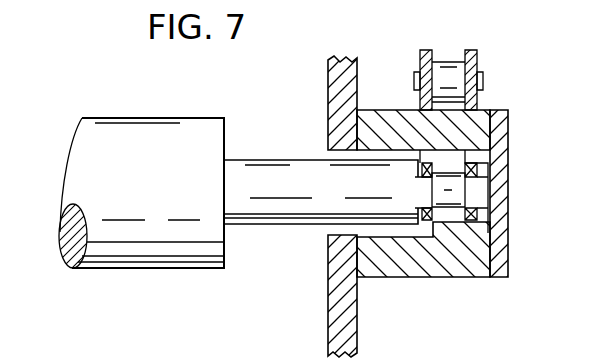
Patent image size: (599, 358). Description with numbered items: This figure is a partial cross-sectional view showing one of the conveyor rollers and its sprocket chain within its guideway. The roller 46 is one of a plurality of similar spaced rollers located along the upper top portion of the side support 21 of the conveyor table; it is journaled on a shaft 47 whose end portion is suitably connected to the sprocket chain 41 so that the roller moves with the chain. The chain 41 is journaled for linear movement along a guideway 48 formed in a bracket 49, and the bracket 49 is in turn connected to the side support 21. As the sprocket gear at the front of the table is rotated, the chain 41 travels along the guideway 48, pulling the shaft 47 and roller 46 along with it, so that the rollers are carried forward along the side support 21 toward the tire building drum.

The side support 21 is at (353, 318).
The sprocket chain 41 is at (497, 170).
The roller 46 is at (152, 248).
The shaft 47 is at (282, 205).
The guideway 48 is at (470, 165).
The bracket 49 is at (392, 118).